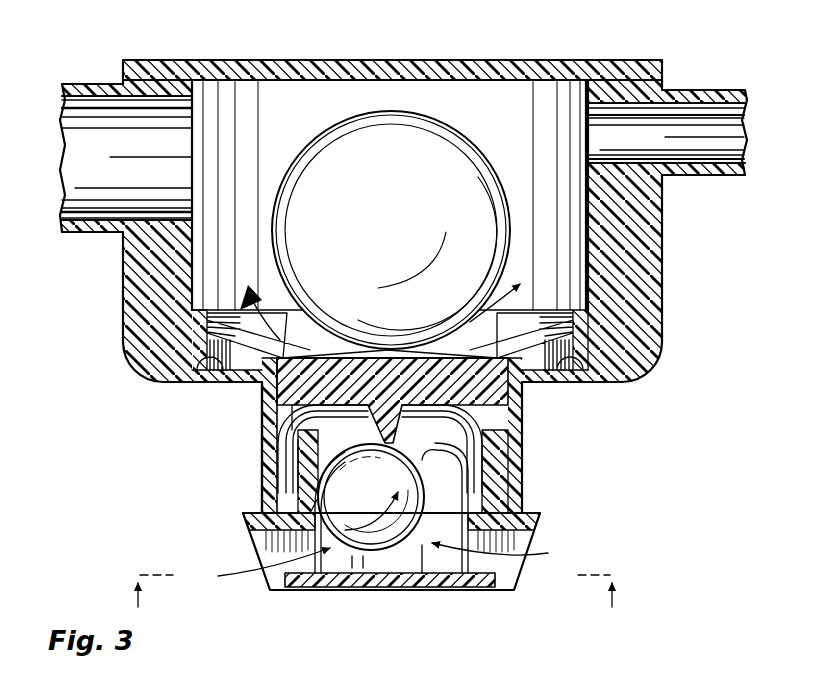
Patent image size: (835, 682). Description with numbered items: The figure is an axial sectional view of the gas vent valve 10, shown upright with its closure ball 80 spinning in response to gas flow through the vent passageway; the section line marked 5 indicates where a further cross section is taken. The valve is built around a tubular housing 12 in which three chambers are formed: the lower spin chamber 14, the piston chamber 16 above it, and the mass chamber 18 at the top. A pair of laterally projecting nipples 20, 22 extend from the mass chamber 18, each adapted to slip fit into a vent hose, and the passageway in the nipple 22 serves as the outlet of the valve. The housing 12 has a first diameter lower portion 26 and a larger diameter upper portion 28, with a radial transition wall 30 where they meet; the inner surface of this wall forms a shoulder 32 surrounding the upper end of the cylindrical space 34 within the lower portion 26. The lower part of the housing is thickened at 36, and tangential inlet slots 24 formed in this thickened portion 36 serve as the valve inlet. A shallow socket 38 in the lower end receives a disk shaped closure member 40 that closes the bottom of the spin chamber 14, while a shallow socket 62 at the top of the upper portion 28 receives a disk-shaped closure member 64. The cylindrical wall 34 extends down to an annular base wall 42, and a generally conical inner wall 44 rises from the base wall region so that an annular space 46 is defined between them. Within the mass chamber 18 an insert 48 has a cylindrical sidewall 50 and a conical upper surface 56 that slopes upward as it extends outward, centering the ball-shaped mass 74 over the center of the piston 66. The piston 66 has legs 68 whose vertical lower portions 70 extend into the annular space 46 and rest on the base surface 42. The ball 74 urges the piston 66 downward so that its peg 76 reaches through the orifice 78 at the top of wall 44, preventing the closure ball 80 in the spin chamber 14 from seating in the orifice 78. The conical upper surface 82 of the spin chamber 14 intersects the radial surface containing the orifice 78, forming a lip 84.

The gas vent valve 10 is at (688, 78).
The tubular housing 12 is at (210, 390).
The spin chamber 14 is at (360, 568).
The piston chamber 16 is at (490, 430).
The mass chamber 18 is at (573, 248).
The nipple 20 is at (85, 84).
The nipple 22 is at (745, 105).
The tangential inlet slots 24 is at (389, 565).
The lower portion 26 is at (268, 490).
The upper portion 28 is at (648, 327).
The radial transition wall 30 is at (545, 385).
The shoulder 32 is at (190, 375).
The cylindrical space 34 is at (262, 410).
The thickened portion 36 is at (514, 522).
The shallow socket 38 is at (318, 548).
The disk shaped closure member 40 is at (395, 588).
The annular base wall 42 is at (255, 520).
The conical inner wall 44 is at (500, 458).
The annular space 46 is at (505, 478).
The insert 48 is at (555, 292).
The cylindrical sidewall 50 is at (590, 350).
The conical upper surface 56 is at (528, 315).
The shallow socket 62 is at (188, 80).
The disk-shaped closure member 64 is at (435, 72).
The piston 66 is at (495, 413).
The legs 68 is at (278, 428).
The vertical lower portions 70 is at (270, 466).
The ball-shaped mass 74 is at (477, 185).
The projection or peg 76 is at (445, 508).
The orifice 78 is at (470, 445).
The closure ball 80 is at (398, 532).
The upper surface 82 is at (371, 497).
The lip 84 is at (371, 497).
The section line 5- 5 is at (373, 593).